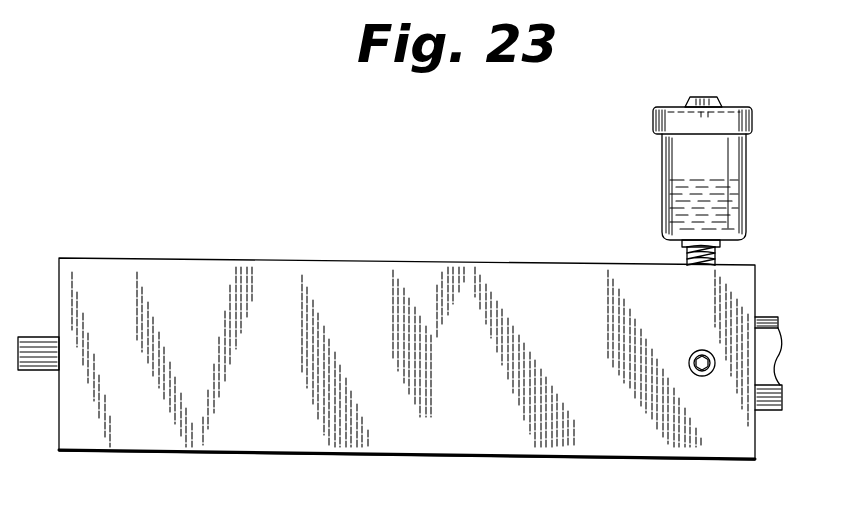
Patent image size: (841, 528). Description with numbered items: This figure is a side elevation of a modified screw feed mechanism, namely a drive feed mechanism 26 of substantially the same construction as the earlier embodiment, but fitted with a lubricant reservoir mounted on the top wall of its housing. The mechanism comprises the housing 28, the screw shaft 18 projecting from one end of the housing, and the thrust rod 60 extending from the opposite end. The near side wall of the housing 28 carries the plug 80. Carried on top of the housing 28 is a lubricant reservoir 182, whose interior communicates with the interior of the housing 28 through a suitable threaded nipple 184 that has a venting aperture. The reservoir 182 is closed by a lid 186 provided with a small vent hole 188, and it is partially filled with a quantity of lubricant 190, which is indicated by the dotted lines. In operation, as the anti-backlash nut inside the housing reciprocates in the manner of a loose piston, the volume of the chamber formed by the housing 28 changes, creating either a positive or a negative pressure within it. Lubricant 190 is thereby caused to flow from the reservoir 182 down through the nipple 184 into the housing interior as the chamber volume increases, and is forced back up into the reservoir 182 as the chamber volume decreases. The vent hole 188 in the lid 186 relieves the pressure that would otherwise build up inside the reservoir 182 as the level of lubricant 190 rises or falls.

The screw shaft 18 is at (45, 355).
The drive feed mechanism 26 is at (417, 248).
The housing 28 is at (470, 447).
The thrust rod 60 is at (768, 410).
The plug 80 is at (700, 350).
The lubricant reservoir 182 is at (728, 165).
The threaded nipple 184 is at (716, 256).
The lid 186 is at (676, 111).
The vent hole 188 is at (712, 95).
The lubricant 190 is at (677, 205).